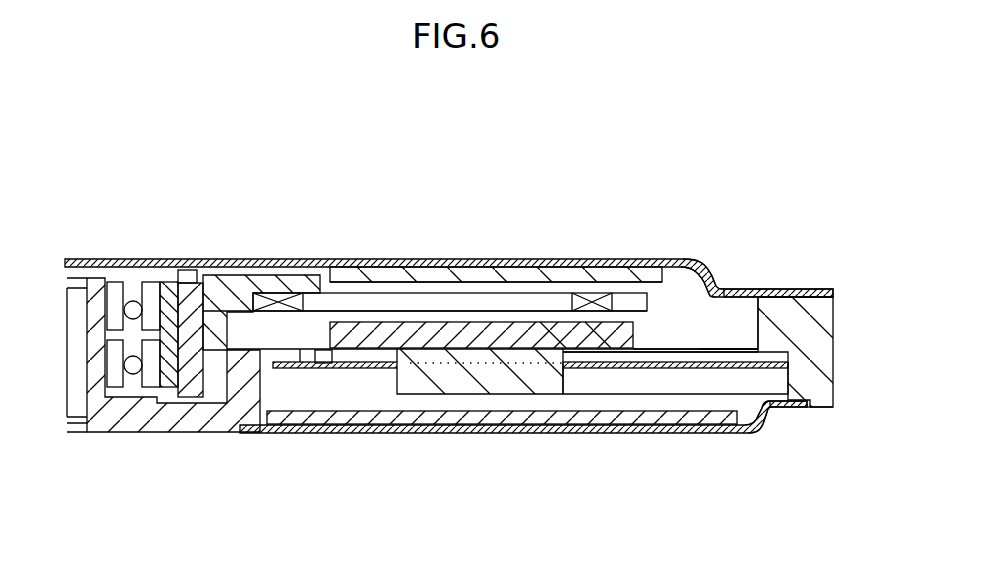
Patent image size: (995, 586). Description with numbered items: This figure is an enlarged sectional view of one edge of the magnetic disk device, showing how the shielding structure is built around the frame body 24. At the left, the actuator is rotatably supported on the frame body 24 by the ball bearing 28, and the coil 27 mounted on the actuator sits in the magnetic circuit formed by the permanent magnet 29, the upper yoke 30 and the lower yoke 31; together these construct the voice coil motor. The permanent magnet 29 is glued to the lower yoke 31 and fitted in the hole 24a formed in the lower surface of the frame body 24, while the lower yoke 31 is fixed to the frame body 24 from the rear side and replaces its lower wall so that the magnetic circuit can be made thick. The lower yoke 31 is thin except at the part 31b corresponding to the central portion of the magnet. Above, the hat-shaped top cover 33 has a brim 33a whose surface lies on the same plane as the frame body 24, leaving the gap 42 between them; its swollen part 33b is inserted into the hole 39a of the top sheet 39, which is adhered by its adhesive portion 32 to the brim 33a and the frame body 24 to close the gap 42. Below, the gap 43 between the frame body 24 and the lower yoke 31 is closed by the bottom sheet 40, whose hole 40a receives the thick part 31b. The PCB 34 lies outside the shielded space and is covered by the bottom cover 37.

The frame body 24 is at (822, 313).
The hole 24a is at (697, 355).
The coil 27 is at (273, 300).
The ball bearing 28 is at (113, 293).
The permanent magnet 29 is at (378, 338).
The upper yoke 30 is at (480, 347).
The lower yoke 31 is at (510, 357).
The part of the lower yoke 31b is at (452, 382).
The adhesive portion 32 is at (814, 407).
The top cover 33 is at (672, 251).
The brim 33a is at (757, 430).
The swollen part 33b is at (684, 267).
The PCB 34 is at (280, 433).
The bottom cover 37 is at (358, 433).
The top sheet 39 is at (755, 288).
The hole 39a is at (725, 360).
The bottom sheet 40 is at (637, 357).
The hole 40a is at (563, 350).
The gap 42 is at (790, 405).
The gap 43 is at (320, 360).